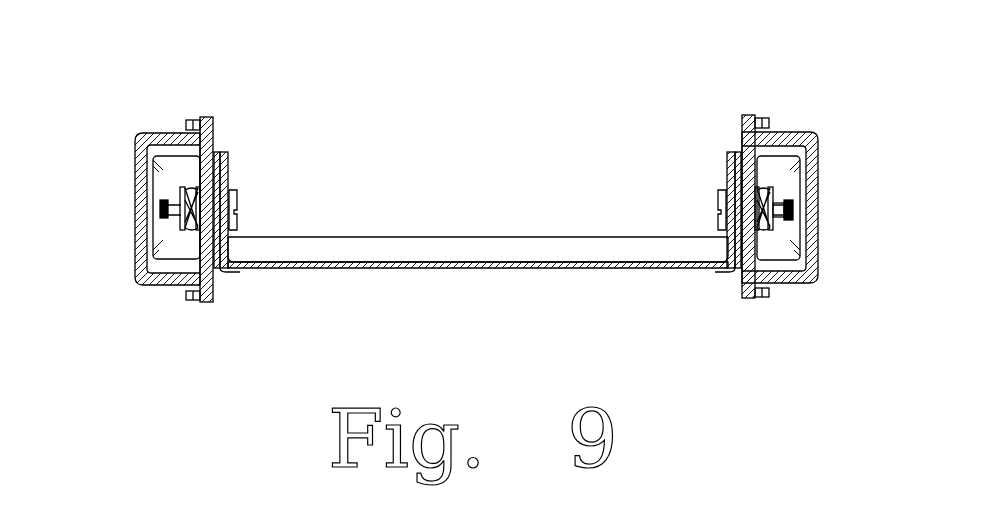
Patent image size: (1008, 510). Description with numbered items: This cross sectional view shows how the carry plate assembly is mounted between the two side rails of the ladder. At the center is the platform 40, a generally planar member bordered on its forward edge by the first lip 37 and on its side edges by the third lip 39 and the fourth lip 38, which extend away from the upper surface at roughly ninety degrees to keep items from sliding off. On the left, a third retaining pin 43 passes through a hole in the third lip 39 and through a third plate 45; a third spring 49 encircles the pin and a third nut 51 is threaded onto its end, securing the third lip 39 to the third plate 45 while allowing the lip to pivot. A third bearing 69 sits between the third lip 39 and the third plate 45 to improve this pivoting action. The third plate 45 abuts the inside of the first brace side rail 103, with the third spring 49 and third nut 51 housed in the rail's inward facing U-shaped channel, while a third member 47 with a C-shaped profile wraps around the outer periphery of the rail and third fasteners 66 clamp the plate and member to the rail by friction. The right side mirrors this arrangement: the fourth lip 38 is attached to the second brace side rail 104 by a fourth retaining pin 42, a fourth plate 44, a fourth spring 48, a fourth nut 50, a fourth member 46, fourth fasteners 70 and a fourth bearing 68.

The first lip 37 is at (474, 240).
The fourth lip 38 is at (729, 152).
The third lip 39 is at (224, 152).
The platform 40 is at (428, 268).
The fourth retaining pin 42 is at (718, 195).
The third retaining pin 43 is at (238, 192).
The fourth plate 44 is at (740, 270).
The third plate 45 is at (228, 268).
The fourth member 46 is at (820, 265).
The third member 47 is at (150, 275).
The fourth spring 48 is at (773, 222).
The third spring 49 is at (203, 283).
The fourth nut 50 is at (786, 202).
The third nut 51 is at (170, 197).
The third fasteners 66 is at (186, 123).
The fourth bearing 68 is at (739, 177).
The third bearing 69 is at (217, 152).
The fourth fasteners 70 is at (766, 122).
The first brace side rail 103 is at (150, 188).
The second brace side rail 104 is at (801, 186).